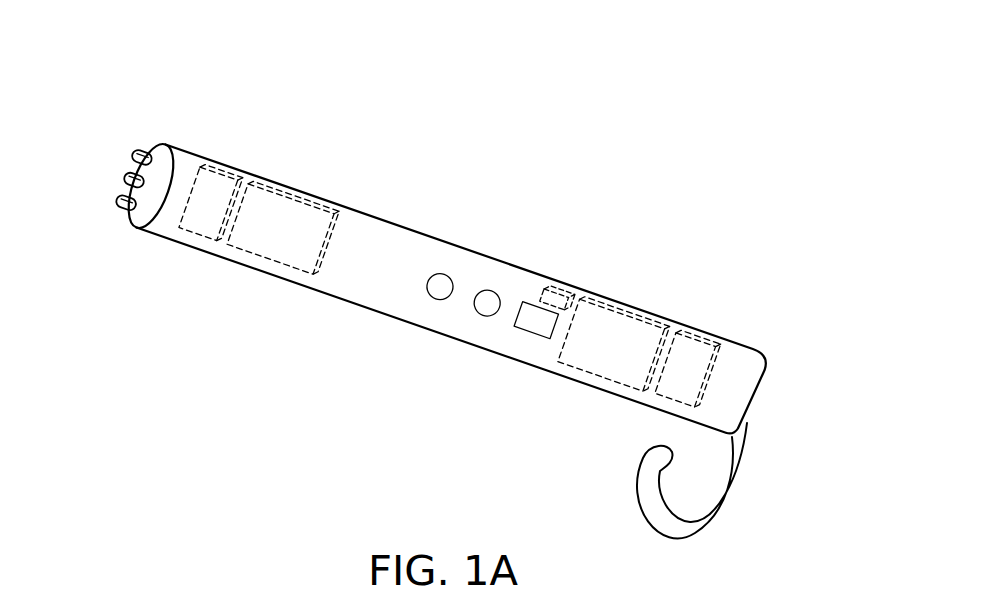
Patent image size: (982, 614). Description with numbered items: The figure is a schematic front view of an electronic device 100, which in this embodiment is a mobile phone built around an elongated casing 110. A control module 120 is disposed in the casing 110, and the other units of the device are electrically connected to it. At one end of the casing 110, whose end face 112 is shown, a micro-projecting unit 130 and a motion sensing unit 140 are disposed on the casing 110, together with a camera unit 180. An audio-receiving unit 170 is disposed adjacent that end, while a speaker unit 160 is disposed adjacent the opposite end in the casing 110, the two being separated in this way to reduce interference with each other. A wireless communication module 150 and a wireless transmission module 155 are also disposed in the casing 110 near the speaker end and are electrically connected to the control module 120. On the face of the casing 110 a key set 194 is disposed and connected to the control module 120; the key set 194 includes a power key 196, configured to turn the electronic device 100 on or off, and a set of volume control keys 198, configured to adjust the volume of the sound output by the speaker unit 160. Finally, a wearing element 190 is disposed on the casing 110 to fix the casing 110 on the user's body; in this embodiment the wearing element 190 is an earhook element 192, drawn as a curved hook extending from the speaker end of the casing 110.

The electronic device 100 is at (157, 52).
The casing 110 is at (480, 253).
The end face of housing 112 is at (160, 147).
The control module 120 is at (303, 198).
The micro-projecting unit 130 is at (130, 180).
The motion sensing unit 140 is at (125, 211).
The wireless communication module 150 is at (637, 315).
The wireless transmission module 155 is at (563, 288).
The speaker unit 160 is at (710, 330).
The audio-receiving unit 170 is at (225, 170).
The camera unit 180 is at (138, 153).
The wearing element 190 is at (712, 512).
The earhook element 192 is at (687, 492).
The key set 194 is at (535, 428).
The power key 196 is at (530, 339).
The volume control keys 198 is at (440, 300).